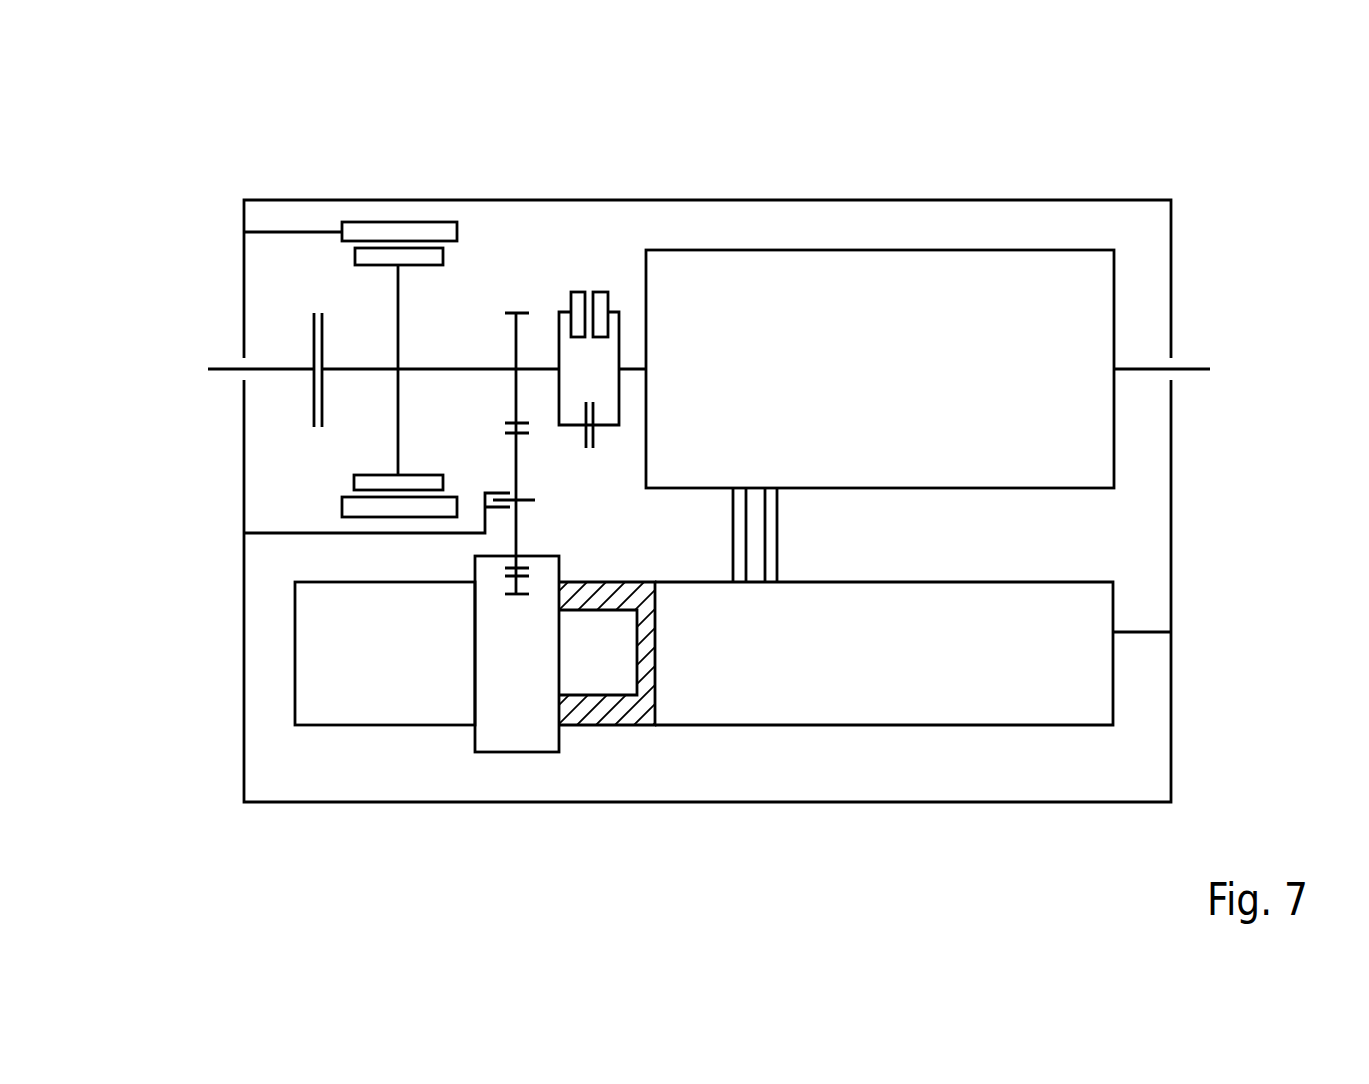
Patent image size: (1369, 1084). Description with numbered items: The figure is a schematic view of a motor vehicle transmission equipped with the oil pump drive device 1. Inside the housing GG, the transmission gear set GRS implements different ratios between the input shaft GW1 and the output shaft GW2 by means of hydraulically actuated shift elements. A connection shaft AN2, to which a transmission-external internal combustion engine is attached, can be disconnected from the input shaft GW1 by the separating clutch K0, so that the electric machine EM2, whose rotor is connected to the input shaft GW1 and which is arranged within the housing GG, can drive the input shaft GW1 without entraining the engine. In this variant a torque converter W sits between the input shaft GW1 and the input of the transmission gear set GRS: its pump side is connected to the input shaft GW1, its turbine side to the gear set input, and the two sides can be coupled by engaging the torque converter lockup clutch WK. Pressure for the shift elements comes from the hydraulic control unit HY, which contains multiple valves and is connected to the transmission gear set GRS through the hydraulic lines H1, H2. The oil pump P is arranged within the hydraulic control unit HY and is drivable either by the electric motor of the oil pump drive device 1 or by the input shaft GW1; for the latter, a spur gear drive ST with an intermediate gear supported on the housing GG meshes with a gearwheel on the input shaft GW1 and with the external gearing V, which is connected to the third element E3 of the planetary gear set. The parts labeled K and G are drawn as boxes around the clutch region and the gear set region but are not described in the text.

The housing GG is at (930, 200).
The transmission gear set GRS is at (820, 250).
The connection shaft AN2 is at (225, 369).
The input shaft GW1 is at (435, 369).
The output shaft GW2 is at (1190, 369).
The separating clutch K0 is at (302, 398).
The electric machine EM2 is at (470, 230).
The spur gear drive ST is at (497, 430).
The torque converter W is at (595, 283).
The torque converter lockup clutch WK is at (590, 397).
The cooling unit K is at (350, 725).
The housing part / gear unit G is at (518, 752).
The external gearing V is at (513, 580).
The third element E3 is at (510, 597).
The oil pump P is at (597, 663).
The hydraulic control unit HY is at (857, 725).
The hydraulic line H1 is at (740, 538).
The hydraulic line H2 is at (773, 538).
The oil pump drive device 1 is at (468, 765).